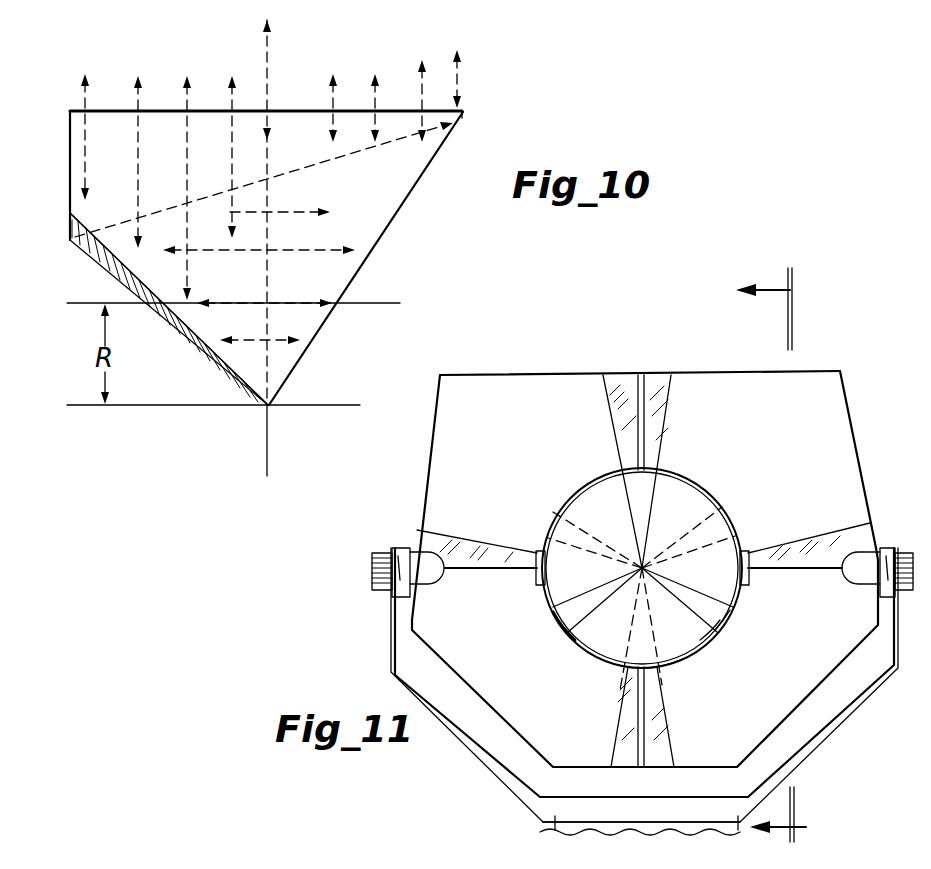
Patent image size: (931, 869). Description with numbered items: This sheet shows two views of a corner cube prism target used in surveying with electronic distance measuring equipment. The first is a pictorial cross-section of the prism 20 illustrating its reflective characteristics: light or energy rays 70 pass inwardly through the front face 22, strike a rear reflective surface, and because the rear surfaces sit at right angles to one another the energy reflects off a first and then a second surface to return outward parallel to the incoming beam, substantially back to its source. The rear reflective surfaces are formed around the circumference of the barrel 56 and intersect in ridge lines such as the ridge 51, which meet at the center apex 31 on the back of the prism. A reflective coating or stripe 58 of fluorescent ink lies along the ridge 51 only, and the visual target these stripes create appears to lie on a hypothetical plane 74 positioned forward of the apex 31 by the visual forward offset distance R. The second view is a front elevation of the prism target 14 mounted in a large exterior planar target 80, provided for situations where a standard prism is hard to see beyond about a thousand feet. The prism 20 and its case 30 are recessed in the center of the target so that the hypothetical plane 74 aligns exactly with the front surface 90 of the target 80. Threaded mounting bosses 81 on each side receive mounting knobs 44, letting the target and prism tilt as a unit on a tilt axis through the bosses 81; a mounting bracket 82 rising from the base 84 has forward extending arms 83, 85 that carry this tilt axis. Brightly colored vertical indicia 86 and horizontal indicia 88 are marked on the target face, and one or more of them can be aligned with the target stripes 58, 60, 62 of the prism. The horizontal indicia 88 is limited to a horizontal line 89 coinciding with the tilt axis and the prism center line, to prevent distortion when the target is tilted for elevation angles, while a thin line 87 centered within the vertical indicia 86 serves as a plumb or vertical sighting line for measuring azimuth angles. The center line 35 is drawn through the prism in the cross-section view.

In FIG. 11, the prism target 14 is at (735, 678).
In FIG. 10, the prism 20 is at (420, 190).
In FIG. 11, the prism 20 is at (712, 634).
In FIG. 10, the front face 22 is at (305, 111).
In FIG. 11, the front face 22 is at (668, 672).
In FIG. 11, the case 30 is at (725, 530).
In FIG. 10, the apex 31 is at (265, 410).
In FIG. 10, the central axis 35 is at (270, 305).
In FIG. 11, the mounting knobs 44 is at (372, 576).
In FIG. 10, the ridge line 51 is at (118, 282).
In FIG. 10, the barrel 56 is at (70, 115).
In FIG. 10, the stripe 58 is at (84, 250).
In FIG. 11, the stripe 58 is at (733, 604).
In FIG. 11, the stripe 60 is at (550, 624).
In FIG. 11, the stripe 62 is at (642, 496).
In FIG. 10, the light or energy rays 70 is at (138, 111).
In FIG. 10, the hypothetical plane 74 is at (251, 304).
In FIG. 11, the exterior planar target 80 is at (727, 378).
In FIG. 11, the mounting bosses 81 is at (422, 560).
In FIG. 11, the mounting bracket 82 is at (835, 714).
In FIG. 11, the forward extending arm 83 is at (870, 545).
In FIG. 11, the base 84 is at (545, 828).
In FIG. 11, the forward extending arm 85 is at (388, 592).
In FIG. 11, the vertical indicia 86 is at (607, 388).
In FIG. 11, the thin line 87 is at (647, 380).
In FIG. 11, the horizontal target indicia 88 is at (440, 548).
In FIG. 11, the horizontal line 89 is at (492, 570).
In FIG. 11, the front surface 90 is at (822, 382).